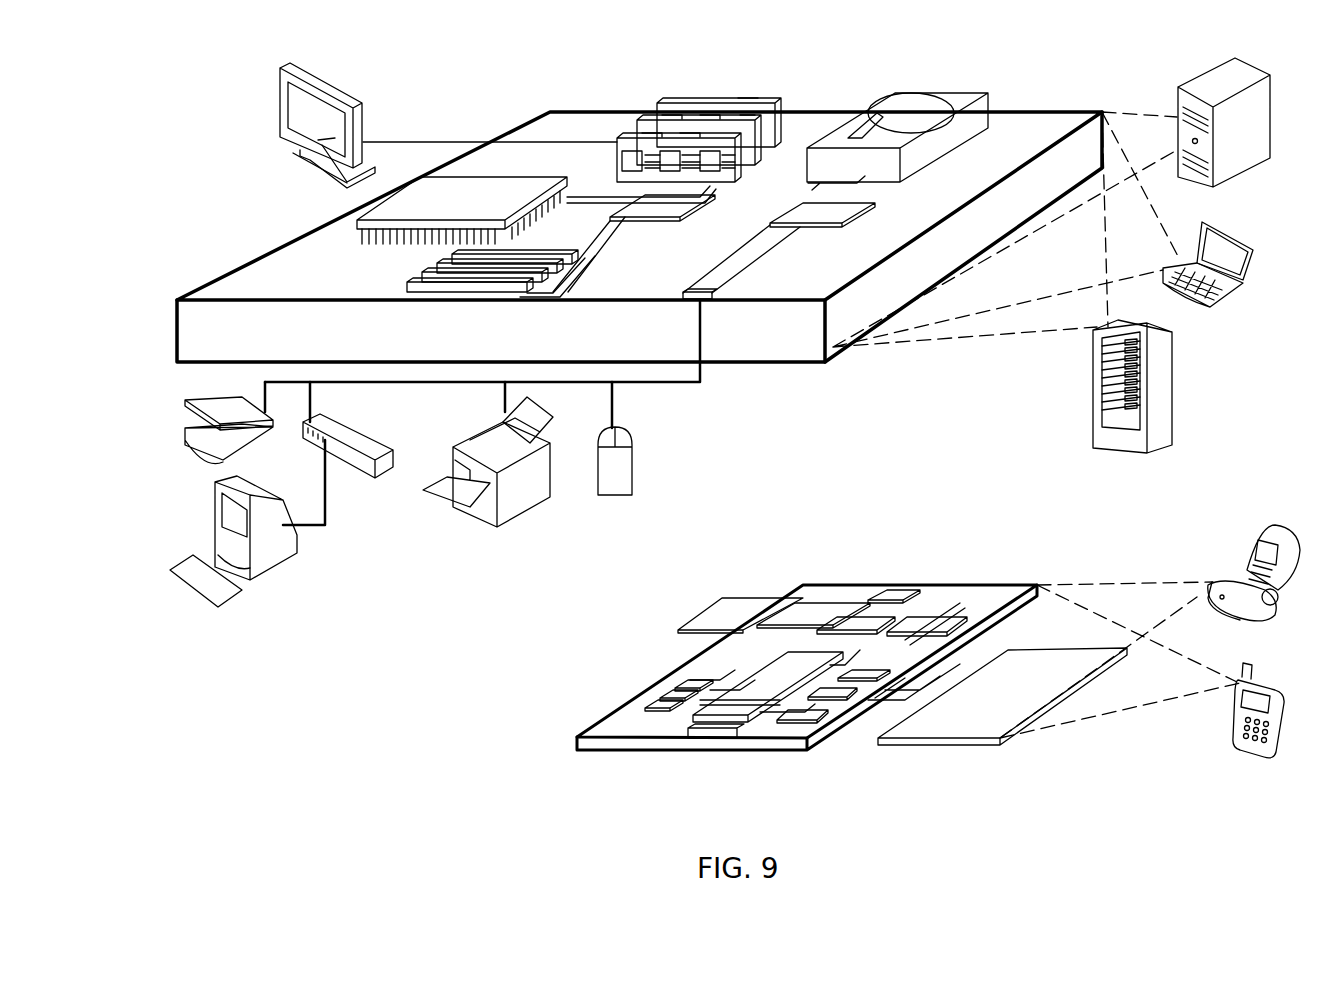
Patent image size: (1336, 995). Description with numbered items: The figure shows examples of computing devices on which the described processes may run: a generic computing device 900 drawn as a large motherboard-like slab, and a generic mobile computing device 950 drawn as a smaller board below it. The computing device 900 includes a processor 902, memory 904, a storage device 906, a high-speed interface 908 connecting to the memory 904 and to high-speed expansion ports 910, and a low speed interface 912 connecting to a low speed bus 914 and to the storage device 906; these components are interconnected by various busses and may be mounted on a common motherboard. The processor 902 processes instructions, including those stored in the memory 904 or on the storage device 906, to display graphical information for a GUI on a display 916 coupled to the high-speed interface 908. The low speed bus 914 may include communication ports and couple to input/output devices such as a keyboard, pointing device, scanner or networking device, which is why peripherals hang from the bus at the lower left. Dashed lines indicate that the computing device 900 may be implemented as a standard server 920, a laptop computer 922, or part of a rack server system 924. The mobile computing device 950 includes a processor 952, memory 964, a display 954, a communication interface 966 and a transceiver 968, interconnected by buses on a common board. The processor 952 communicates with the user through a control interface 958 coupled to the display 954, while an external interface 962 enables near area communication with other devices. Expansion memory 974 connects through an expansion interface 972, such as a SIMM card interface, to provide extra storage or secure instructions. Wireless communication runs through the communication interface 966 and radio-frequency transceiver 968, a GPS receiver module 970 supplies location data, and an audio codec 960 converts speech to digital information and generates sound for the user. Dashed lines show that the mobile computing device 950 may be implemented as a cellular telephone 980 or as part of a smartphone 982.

The computing device 900 is at (479, 82).
The processor 902 is at (357, 227).
The memory 904 is at (663, 103).
The storage device 906 is at (890, 92).
The high-speed interface 908 is at (640, 207).
The high-speed expansion ports 910 is at (423, 271).
The low speed interface 912 is at (823, 213).
The low speed bus 914 is at (697, 303).
The display 916 is at (280, 68).
The standard server 920 is at (1178, 92).
The laptop computer 922 is at (1207, 222).
The rack server system 924 is at (1093, 410).
The mobile computing device 950 is at (788, 562).
The processor 952 is at (747, 724).
The display 954 is at (1000, 739).
The control interface 958 is at (847, 697).
The audio codec 960 is at (865, 682).
The external interface 962 is at (712, 743).
The memory 964 is at (660, 702).
The communication interface 966 is at (855, 620).
The transceiver 968 is at (930, 618).
The GPS receiver module 970 is at (893, 590).
The expansion interface 972 is at (787, 603).
The expansion memory 974 is at (720, 598).
The cellular telephone 980 is at (1264, 524).
The smartphone 982 is at (1247, 665).